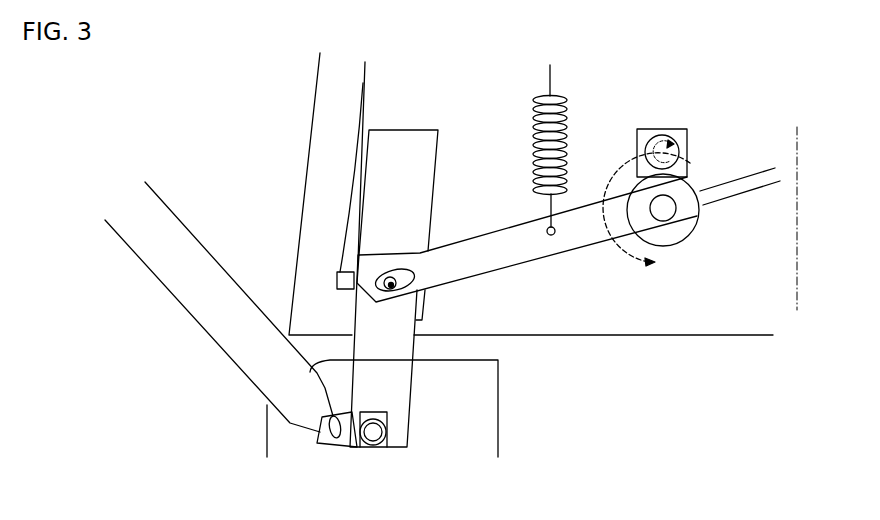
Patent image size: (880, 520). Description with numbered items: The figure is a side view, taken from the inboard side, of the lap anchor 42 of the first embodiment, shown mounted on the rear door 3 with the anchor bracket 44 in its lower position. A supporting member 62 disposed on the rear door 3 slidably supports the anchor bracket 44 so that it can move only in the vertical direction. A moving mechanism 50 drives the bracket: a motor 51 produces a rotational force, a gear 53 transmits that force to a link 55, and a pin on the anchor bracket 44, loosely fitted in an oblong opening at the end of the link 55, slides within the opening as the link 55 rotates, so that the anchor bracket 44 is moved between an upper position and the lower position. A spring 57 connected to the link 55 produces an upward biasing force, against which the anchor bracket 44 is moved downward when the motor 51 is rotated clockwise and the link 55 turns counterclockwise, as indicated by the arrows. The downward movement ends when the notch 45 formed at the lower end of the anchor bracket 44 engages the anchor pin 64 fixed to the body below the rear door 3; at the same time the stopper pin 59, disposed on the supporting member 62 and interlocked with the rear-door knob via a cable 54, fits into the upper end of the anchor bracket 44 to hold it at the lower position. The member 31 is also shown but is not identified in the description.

The rear door 3 is at (306, 129).
The arm 31 is at (192, 292).
The lap anchor 42 is at (322, 440).
The anchor bracket 44 is at (398, 413).
The notch 45 is at (378, 412).
The moving mechanism 50 is at (802, 217).
The motor 51 is at (797, 127).
The gear 53 is at (692, 181).
The cable 54 is at (363, 82).
The link 55 is at (797, 290).
The spring 57 is at (797, 269).
The stopper pin 59 is at (797, 309).
The supporting member 62 is at (438, 153).
The anchor pin 64 is at (380, 447).